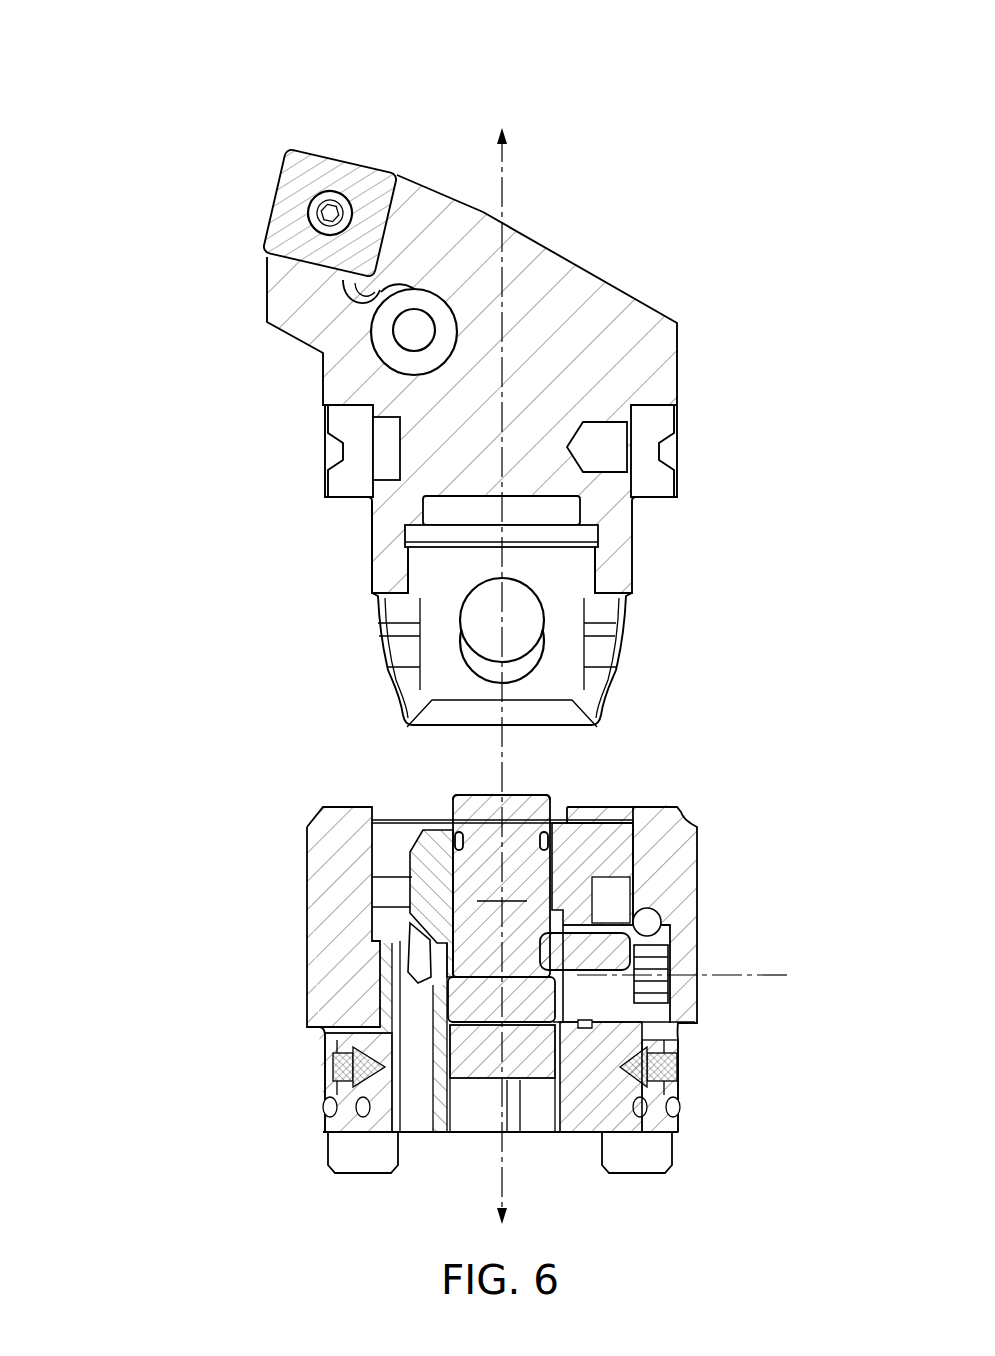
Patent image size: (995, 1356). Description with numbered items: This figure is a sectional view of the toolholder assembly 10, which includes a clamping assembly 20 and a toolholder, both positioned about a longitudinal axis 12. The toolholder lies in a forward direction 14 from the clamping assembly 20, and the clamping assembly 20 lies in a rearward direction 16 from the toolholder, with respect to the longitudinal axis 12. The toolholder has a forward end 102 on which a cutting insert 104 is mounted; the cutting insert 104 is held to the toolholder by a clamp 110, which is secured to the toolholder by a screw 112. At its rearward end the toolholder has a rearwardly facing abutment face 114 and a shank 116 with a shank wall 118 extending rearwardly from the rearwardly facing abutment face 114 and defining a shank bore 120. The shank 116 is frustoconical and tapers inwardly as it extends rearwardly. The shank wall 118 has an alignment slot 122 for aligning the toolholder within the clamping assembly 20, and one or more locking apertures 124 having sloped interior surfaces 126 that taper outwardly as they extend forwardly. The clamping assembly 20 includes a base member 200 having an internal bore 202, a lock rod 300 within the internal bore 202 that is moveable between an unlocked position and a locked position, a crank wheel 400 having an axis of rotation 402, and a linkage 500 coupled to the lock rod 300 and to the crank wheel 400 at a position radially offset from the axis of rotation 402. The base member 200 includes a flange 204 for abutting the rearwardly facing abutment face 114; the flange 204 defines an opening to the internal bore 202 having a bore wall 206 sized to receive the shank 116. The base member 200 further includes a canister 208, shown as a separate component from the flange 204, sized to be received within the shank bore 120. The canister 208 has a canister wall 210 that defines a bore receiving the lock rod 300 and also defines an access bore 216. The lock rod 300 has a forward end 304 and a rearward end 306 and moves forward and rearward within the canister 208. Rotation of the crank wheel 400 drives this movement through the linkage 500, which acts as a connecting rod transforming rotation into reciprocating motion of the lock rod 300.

The toolholder assembly 10 is at (115, 90).
The longitudinal axis 12 is at (511, 197).
The forward direction 14 is at (512, 133).
The rearward direction 16 is at (512, 1220).
The clamping assembly 20 is at (775, 757).
The forward end 102 is at (250, 193).
The cutting insert 104 is at (305, 168).
The clamp 110 is at (409, 294).
The screw 112 is at (418, 336).
The rearwardly facing abutment face 114 is at (660, 503).
The shank 116 is at (343, 521).
The shank wall 118 is at (370, 550).
The shank bore 120 is at (566, 617).
The alignment slot 122 is at (618, 687).
The locking apertures 124 is at (480, 615).
The sloped interior surfaces 126 is at (488, 668).
The base member 200 is at (678, 863).
The internal bore 202 is at (628, 813).
The flange 204 is at (331, 797).
The bore wall 206 is at (341, 852).
The canister 208 is at (568, 852).
The canister wall 210 is at (564, 882).
The access bore 216 is at (588, 1024).
The lock rod 300 is at (501, 886).
The forward end 304 is at (521, 800).
The rearward end 306 is at (472, 1073).
The crank wheel 400 is at (666, 960).
The axis of rotation 402 is at (737, 978).
The linkage 500 is at (561, 1028).